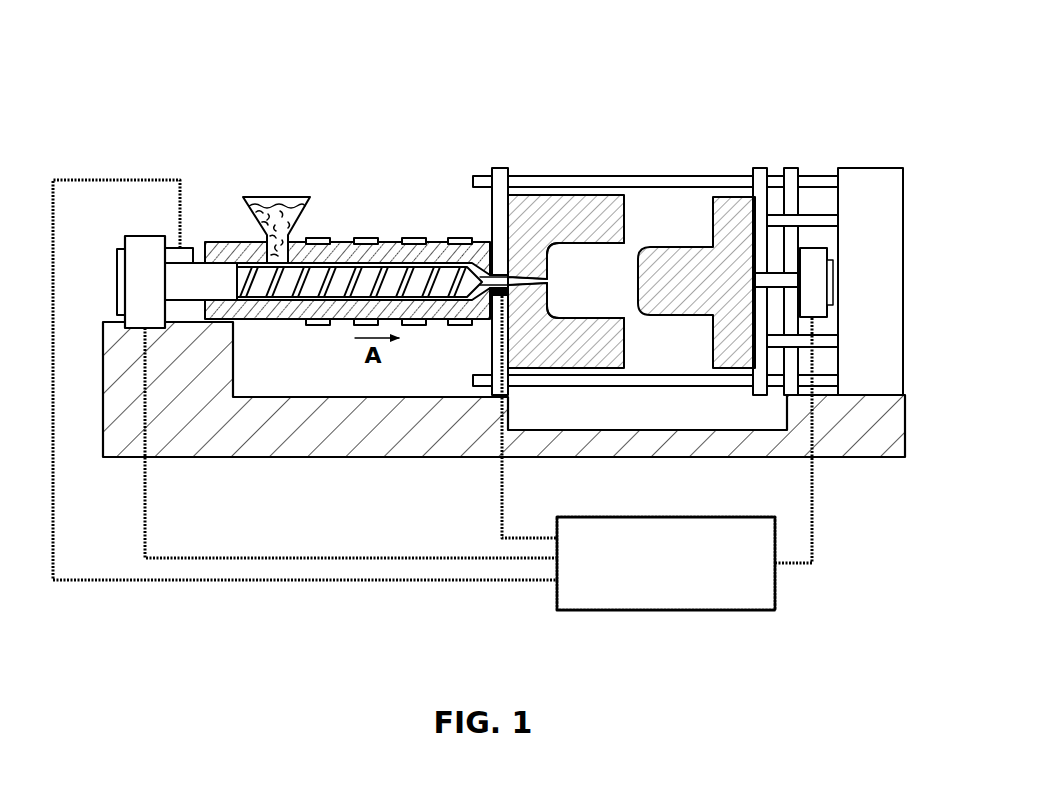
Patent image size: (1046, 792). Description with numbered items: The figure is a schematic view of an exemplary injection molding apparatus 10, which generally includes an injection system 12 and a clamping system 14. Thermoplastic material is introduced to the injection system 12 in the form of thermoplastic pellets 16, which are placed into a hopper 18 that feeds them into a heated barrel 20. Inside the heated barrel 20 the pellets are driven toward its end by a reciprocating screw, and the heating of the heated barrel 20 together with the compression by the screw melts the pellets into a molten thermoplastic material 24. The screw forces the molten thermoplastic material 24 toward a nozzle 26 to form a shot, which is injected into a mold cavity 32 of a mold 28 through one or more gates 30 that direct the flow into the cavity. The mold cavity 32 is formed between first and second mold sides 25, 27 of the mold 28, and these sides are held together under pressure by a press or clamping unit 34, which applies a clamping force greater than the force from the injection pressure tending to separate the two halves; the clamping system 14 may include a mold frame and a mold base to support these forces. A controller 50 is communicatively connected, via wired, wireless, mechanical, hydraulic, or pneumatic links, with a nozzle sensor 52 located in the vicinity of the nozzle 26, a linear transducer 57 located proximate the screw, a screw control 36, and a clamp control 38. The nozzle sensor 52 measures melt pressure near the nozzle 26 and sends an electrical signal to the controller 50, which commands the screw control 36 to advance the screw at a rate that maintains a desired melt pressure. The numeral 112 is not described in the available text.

The injection molding apparatus 10 is at (456, 64).
The injection system 12 is at (327, 343).
The clamping system 14 is at (861, 482).
The thermoplastic pellets 16 is at (272, 212).
The hopper 18 is at (292, 198).
The heated barrel 20 is at (344, 241).
The molten thermoplastic material 24 is at (390, 267).
The first mold side 25 is at (568, 355).
The nozzle 26 is at (510, 272).
The second mold side 27 is at (697, 302).
The mold 28 is at (631, 263).
The gate 30 is at (537, 277).
The mold cavity 32 is at (588, 255).
The clamping unit 34 is at (845, 163).
The screw control 36 is at (143, 236).
The clamp control 38 is at (833, 271).
The controller 50 is at (689, 613).
The nozzle sensor 52 is at (494, 294).
The linear transducer 57 is at (188, 247).
The screw flights 112 is at (286, 285).